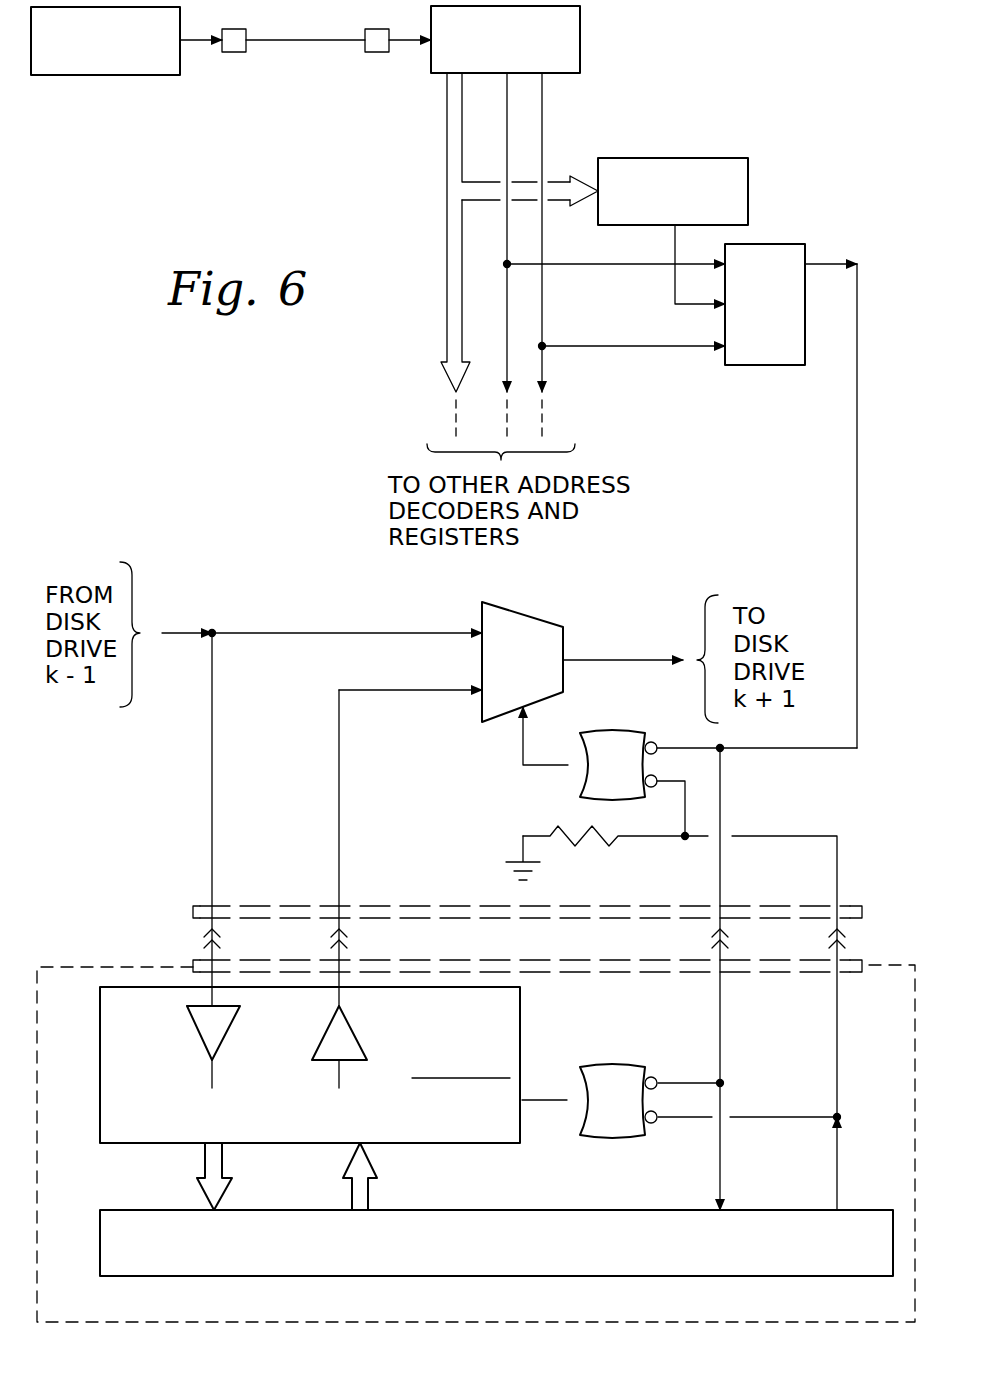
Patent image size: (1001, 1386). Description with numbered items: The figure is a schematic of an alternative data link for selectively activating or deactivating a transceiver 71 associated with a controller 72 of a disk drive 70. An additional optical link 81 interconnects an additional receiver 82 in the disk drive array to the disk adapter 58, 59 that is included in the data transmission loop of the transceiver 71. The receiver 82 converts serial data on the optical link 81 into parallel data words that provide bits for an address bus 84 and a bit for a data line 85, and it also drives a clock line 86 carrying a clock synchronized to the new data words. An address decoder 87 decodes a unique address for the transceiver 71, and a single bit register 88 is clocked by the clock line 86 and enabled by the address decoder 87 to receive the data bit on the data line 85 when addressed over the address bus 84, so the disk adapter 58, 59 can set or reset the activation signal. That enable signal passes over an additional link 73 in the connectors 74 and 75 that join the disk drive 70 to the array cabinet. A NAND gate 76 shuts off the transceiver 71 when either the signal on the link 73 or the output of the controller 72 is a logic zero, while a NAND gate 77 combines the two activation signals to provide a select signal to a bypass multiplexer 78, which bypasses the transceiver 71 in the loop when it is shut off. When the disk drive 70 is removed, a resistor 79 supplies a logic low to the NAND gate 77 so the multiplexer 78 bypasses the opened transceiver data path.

The disk adapter 58 is at (80, 75).
The disk adapter 59 is at (110, 58).
The optical link 81 is at (286, 40).
The receiver 82 is at (580, 40).
The address bus 84 is at (447, 164).
The data line 85 is at (507, 110).
The clock line 86 is at (542, 135).
The address decoder 87 is at (748, 192).
The single bit register 88 is at (762, 365).
The bypass multiplexer 78 is at (540, 617).
The NAND gate 77 is at (620, 733).
The resistor 79 is at (580, 828).
The link 73 is at (737, 938).
The connector 74 is at (862, 912).
The connector 75 is at (862, 966).
The disk drive 70 is at (130, 963).
The transceiver 71 is at (522, 1027).
The NAND gate 76 is at (633, 1067).
The controller 72 is at (555, 1210).